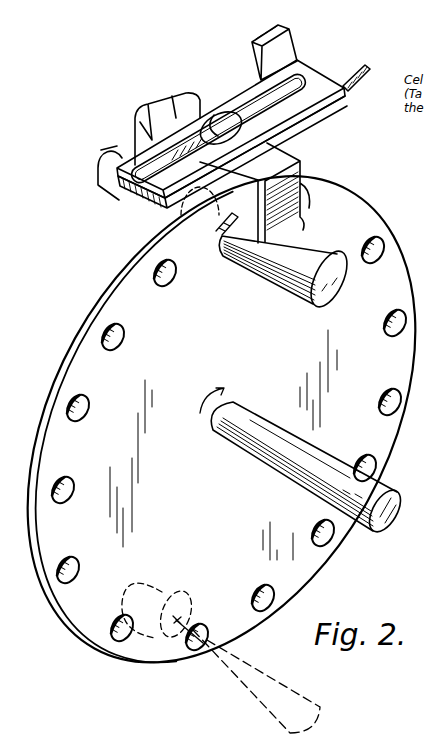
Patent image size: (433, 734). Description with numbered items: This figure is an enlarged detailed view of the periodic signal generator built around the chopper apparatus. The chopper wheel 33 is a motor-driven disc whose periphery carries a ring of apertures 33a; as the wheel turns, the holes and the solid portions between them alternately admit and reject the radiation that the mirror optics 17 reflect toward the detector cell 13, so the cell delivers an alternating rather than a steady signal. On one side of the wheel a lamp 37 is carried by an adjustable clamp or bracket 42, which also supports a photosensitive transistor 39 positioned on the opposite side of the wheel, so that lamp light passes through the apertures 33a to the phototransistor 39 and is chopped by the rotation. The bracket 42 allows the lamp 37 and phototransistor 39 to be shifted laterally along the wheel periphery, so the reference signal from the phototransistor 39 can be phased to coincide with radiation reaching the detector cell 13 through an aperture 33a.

The detector cell 13 is at (178, 582).
The mirror optics 17 is at (320, 713).
The chopper wheel 33 is at (97, 310).
The apertures 33a is at (72, 406).
The lamp 37 is at (120, 200).
The photosensitive transistor 39 is at (293, 274).
The adjustable bracket 42 is at (284, 124).